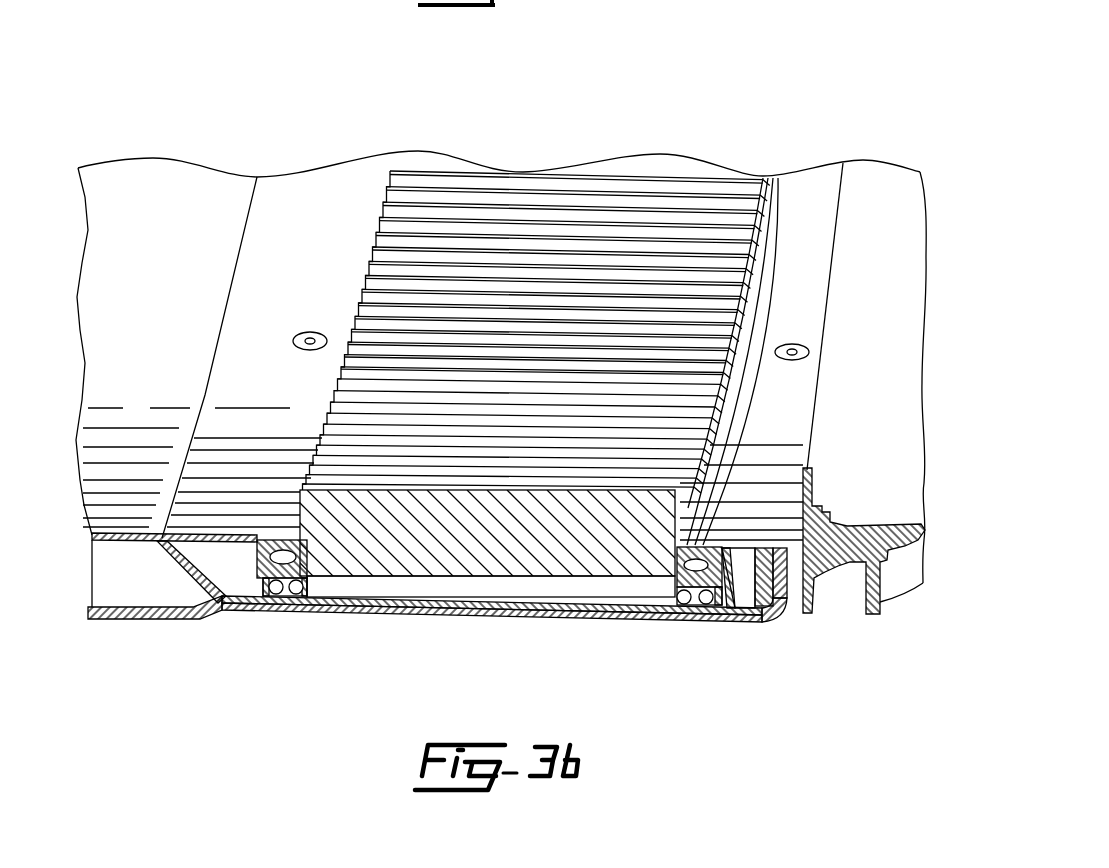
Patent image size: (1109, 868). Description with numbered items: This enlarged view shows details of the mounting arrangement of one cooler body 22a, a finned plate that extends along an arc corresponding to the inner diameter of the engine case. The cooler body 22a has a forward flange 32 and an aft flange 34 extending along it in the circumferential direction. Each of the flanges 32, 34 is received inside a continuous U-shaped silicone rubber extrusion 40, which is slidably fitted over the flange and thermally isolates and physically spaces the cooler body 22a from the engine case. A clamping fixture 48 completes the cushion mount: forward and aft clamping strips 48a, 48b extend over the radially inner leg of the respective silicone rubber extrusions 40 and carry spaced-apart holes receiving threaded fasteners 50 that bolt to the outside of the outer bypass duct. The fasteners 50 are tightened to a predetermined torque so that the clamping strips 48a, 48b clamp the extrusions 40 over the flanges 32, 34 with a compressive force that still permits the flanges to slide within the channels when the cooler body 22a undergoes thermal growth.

The clamping fixture 48 is at (808, 156).
The forward clamping strip 48a is at (748, 523).
The aft clamping strip 48b is at (248, 465).
The threaded fastener 50 is at (312, 332).
The silicone rubber extrusion 40 is at (255, 593).
The aft flange 34 is at (287, 572).
The forward flange 32 is at (693, 594).
The cooler body 22a is at (463, 538).